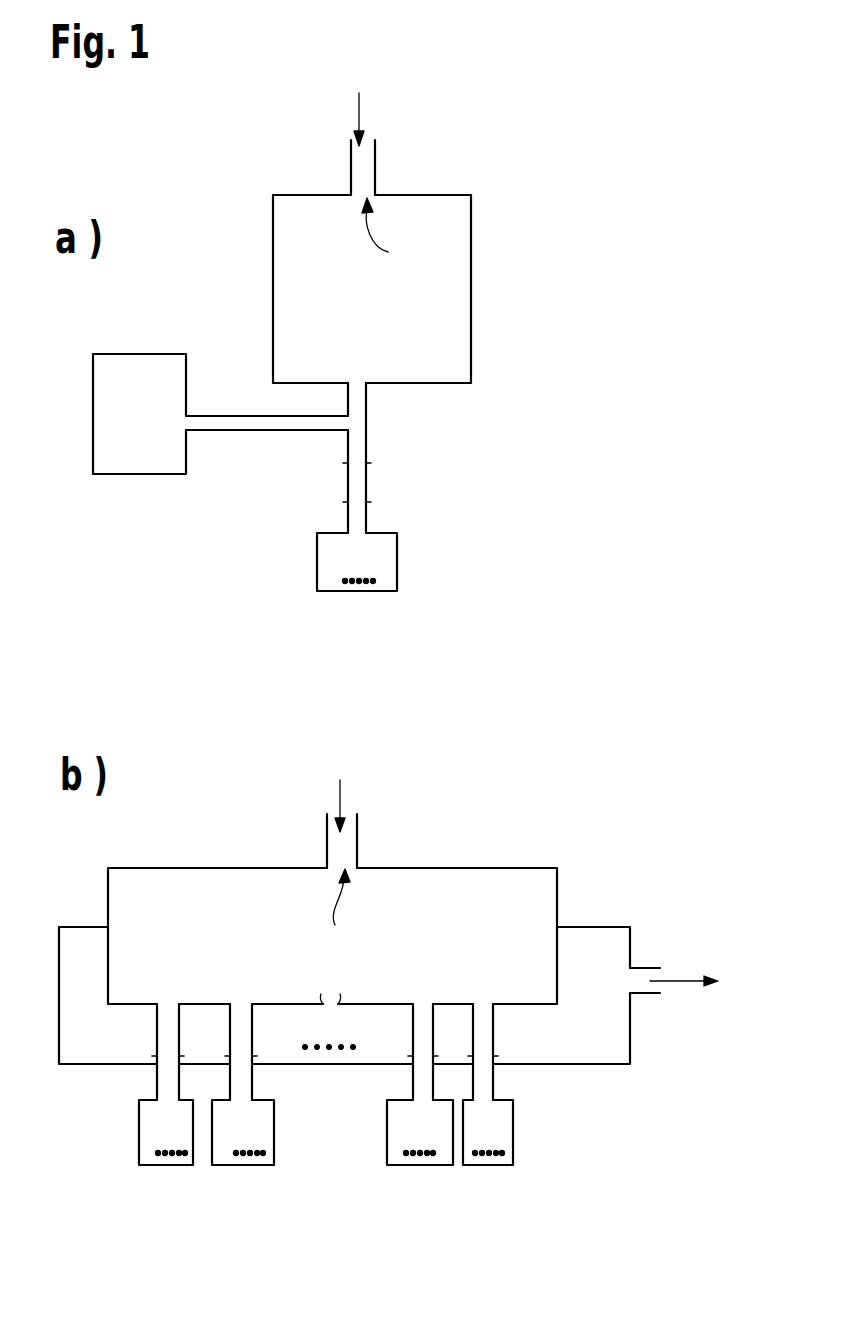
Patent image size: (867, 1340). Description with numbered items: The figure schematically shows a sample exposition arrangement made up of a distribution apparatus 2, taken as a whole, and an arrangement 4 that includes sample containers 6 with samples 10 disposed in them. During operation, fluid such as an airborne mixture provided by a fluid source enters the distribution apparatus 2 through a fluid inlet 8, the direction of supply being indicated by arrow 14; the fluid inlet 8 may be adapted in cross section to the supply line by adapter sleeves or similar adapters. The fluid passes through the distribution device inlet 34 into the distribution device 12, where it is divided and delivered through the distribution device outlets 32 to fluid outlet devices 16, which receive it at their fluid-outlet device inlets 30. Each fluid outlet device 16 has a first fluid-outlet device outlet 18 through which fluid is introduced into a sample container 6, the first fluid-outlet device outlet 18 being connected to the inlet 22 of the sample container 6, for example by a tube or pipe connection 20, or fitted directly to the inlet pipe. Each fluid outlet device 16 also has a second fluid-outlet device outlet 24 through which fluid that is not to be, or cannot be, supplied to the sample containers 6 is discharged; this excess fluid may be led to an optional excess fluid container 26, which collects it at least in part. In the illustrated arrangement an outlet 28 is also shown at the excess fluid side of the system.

The distribution apparatus 2 is at (576, 289).
The arrangement including sample containers 4 is at (521, 552).
The sample container 6 is at (316, 552).
The fluid inlet 8 is at (376, 158).
The sample 10 is at (366, 590).
The distribution device 12 is at (472, 232).
The arrow 14 is at (352, 445).
The fluid outlet device 16 is at (427, 426).
The first fluid-outlet device outlet 18 is at (367, 435).
The tube or pipe connection 20 is at (367, 480).
The inlet of sample container 22 is at (347, 447).
The second fluid-outlet device outlet 24 is at (283, 402).
The excess fluid container 26 is at (150, 354).
The outlet 28 is at (640, 966).
The fluid-outlet device inlet 30 is at (367, 388).
The distribution device outlet 32 is at (356, 374).
The distribution device inlet 34 is at (377, 573).